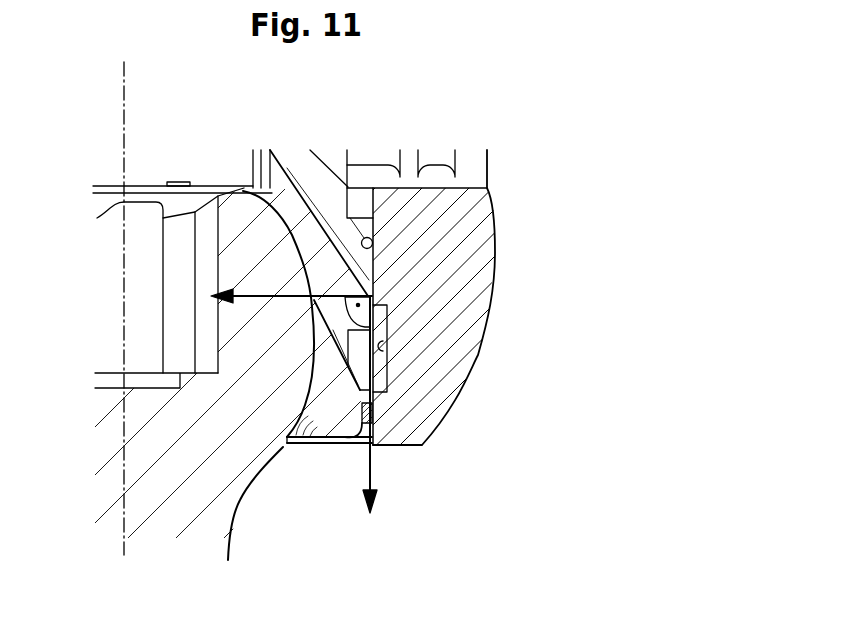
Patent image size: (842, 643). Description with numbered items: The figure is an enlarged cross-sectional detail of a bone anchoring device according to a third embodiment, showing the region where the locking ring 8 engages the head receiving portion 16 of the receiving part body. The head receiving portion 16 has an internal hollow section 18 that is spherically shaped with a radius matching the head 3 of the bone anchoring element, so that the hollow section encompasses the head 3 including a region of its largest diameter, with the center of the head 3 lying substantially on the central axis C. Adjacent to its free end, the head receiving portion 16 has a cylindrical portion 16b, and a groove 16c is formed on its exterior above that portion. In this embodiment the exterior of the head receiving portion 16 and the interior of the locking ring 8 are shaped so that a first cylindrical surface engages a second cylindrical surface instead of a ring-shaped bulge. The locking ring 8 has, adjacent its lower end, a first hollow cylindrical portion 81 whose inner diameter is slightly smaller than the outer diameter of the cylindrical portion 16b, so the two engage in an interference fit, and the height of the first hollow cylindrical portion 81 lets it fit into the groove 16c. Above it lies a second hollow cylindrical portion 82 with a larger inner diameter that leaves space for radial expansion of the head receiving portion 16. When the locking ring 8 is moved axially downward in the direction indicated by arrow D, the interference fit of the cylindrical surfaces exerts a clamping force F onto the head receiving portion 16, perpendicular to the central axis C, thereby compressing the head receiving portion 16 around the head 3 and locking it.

The head 3 is at (243, 448).
The locking ring 8 is at (522, 212).
The head receiving portion 16 is at (299, 165).
The cylindrical portion 16b is at (353, 424).
The groove 16c is at (378, 372).
The internal hollow section 18 is at (292, 222).
The first hollow cylindrical portion 81 is at (422, 447).
The second hollow cylindrical portion 82 is at (382, 352).
The central axis C is at (133, 101).
The clamping force F is at (268, 297).
The direction of locking ring movement D is at (374, 468).